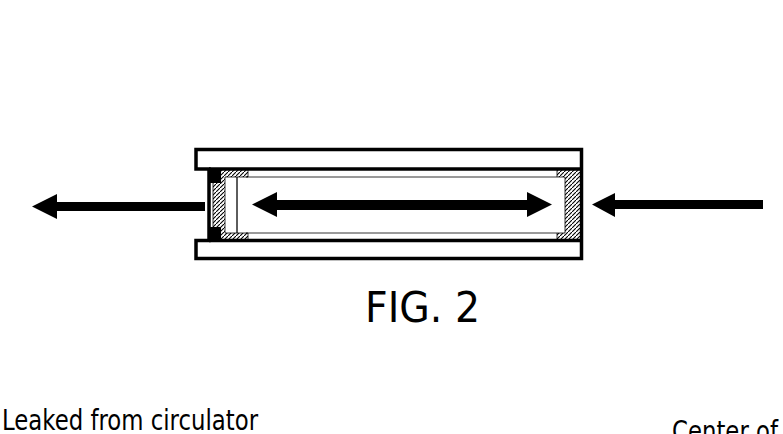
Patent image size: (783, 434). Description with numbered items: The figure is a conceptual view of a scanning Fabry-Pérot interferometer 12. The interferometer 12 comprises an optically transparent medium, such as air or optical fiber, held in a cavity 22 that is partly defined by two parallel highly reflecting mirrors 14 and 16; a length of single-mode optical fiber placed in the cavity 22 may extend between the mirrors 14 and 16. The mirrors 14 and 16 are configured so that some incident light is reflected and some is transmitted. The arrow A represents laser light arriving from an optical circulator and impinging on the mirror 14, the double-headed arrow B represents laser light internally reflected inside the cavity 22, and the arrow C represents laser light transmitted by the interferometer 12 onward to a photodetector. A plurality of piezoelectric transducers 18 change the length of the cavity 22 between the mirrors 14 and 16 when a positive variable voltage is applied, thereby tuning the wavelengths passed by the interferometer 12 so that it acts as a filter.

The Fabry-Pérot interferometer 12 is at (606, 97).
The mirror 14 is at (585, 183).
The mirror 16 is at (226, 180).
The piezoelectric transducers 18 is at (210, 232).
The cavity 22 is at (337, 181).
The arrow A is at (672, 207).
The double-headed arrow B is at (426, 200).
The arrow C is at (128, 205).